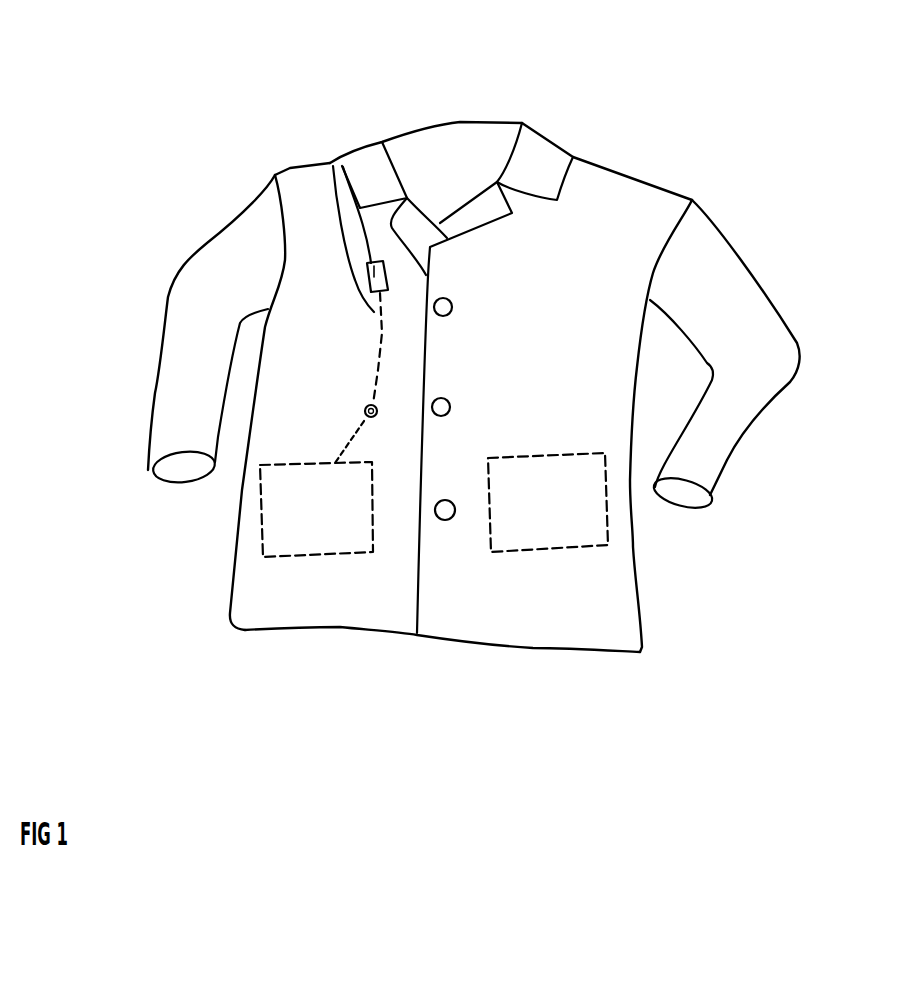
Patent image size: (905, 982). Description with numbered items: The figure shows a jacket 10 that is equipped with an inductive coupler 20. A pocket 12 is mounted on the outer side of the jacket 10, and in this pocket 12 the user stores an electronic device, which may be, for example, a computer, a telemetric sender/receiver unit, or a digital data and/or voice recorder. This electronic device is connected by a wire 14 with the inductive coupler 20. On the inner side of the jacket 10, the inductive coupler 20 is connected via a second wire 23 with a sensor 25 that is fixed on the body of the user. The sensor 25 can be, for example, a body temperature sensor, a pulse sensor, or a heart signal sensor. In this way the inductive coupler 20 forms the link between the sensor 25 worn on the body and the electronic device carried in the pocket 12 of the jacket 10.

The jacket 10 is at (668, 133).
The pocket 12 is at (262, 558).
The wire 14 is at (330, 448).
The inductive coupler 20 is at (370, 405).
The second wire 23 is at (360, 308).
The sensor 25 is at (333, 166).